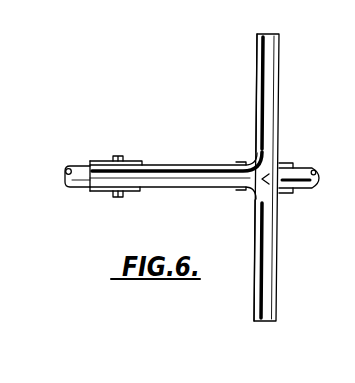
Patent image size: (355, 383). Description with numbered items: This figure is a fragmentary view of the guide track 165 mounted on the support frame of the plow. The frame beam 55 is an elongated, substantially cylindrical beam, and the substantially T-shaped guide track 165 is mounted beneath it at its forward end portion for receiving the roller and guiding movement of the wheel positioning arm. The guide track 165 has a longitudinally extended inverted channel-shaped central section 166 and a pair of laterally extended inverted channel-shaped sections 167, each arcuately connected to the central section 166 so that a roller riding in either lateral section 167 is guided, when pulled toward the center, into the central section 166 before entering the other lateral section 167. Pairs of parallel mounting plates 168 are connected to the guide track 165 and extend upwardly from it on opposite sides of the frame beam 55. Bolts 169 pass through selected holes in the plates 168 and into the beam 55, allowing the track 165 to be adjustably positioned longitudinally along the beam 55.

The frame beam 55 is at (82, 172).
The guide track 165 is at (217, 165).
The central section 166 is at (213, 188).
The lateral sections 167 is at (280, 62).
The mounting plates 168 is at (128, 161).
The bolts 169 is at (115, 198).